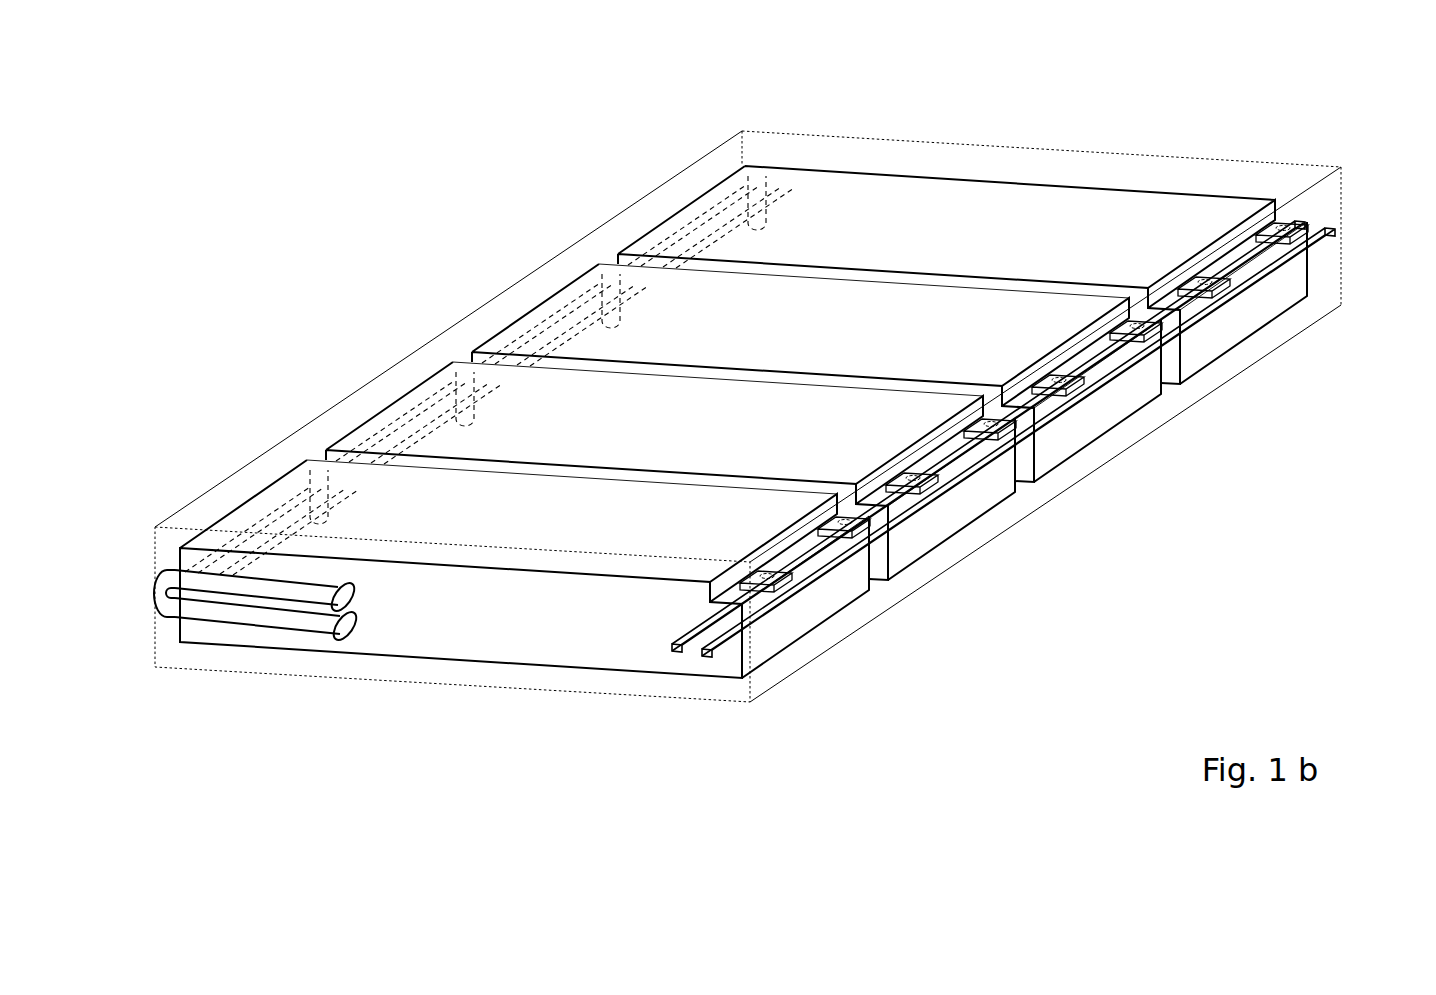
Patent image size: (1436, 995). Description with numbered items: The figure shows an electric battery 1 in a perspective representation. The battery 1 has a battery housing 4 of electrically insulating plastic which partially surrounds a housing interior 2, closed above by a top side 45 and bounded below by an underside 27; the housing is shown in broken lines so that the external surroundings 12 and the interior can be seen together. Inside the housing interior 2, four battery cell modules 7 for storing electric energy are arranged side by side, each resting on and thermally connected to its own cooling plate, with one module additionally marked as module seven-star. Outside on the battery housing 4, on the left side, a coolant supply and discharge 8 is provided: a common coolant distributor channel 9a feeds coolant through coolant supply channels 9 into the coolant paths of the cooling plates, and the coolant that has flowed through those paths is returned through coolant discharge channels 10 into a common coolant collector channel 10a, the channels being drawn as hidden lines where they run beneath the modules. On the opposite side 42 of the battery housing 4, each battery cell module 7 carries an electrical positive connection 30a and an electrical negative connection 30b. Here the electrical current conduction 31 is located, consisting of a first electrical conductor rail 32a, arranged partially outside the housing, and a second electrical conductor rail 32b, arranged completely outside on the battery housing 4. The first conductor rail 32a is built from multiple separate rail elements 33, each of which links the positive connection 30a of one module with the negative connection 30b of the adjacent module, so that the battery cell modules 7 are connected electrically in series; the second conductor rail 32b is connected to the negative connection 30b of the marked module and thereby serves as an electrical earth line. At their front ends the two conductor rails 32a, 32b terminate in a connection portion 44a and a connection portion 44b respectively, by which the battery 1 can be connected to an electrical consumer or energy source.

The electric battery 1 is at (410, 203).
The housing interior 2 is at (1075, 176).
The battery housing 4 is at (946, 132).
The battery cell module 7 is at (541, 529).
The coolant supply and discharge 8 is at (142, 602).
The coolant supply channel 9 is at (202, 512).
The coolant distributor channel 9a is at (425, 405).
The coolant discharge channel 10 is at (330, 520).
The coolant collector channel 10a is at (280, 510).
The external surroundings 12 is at (696, 94).
The underside 27 is at (388, 683).
The electrical positive connection 30a is at (748, 574).
The electrical negative connection 30b is at (824, 524).
The electrical current conduction 31 is at (1328, 210).
The first electrical conductor rail 32a is at (1197, 303).
The second electrical conductor rail 32b is at (1337, 231).
The rail element 33 is at (1025, 402).
The side of the battery housing 42 is at (1330, 290).
The connection portion 44a is at (672, 652).
The connection portion 44b is at (705, 658).
The top side 45 is at (843, 148).